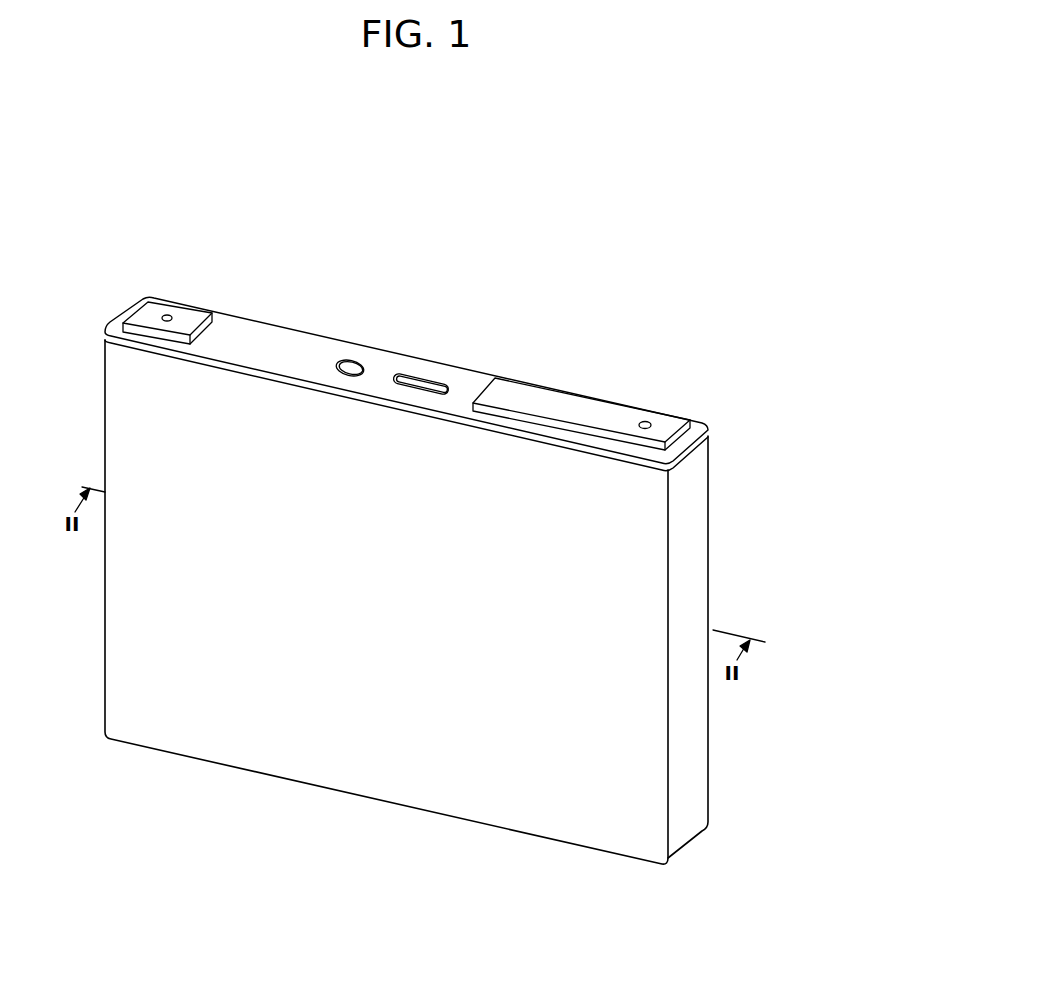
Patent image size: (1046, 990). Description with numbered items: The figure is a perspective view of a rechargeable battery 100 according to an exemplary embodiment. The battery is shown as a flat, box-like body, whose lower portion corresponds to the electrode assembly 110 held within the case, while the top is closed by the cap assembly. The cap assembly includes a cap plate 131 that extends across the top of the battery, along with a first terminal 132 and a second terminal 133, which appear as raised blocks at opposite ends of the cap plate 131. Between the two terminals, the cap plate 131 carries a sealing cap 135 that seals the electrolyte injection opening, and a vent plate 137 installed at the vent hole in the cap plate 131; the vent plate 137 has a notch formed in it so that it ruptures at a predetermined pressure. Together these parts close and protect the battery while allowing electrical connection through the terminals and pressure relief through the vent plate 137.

The rechargeable battery 100 is at (506, 268).
The electrode assembly 110 is at (408, 752).
The cap plate 131 is at (287, 349).
The first terminal 132 is at (603, 410).
The second terminal 133 is at (183, 313).
The sealing cap 135 is at (350, 368).
The vent plate 137 is at (420, 385).